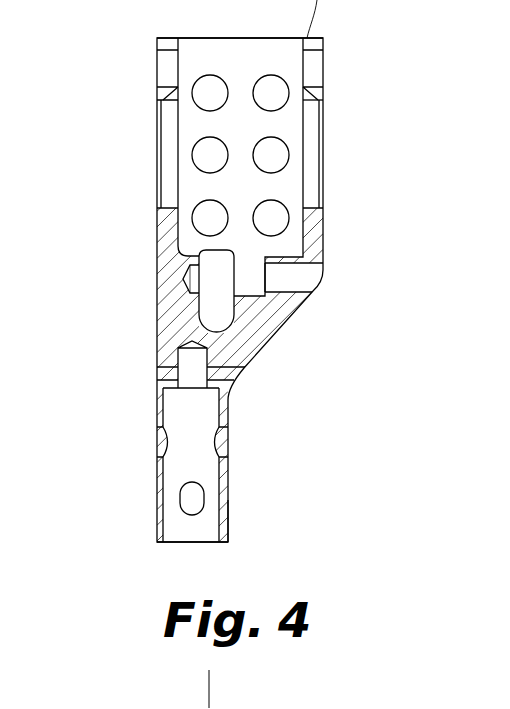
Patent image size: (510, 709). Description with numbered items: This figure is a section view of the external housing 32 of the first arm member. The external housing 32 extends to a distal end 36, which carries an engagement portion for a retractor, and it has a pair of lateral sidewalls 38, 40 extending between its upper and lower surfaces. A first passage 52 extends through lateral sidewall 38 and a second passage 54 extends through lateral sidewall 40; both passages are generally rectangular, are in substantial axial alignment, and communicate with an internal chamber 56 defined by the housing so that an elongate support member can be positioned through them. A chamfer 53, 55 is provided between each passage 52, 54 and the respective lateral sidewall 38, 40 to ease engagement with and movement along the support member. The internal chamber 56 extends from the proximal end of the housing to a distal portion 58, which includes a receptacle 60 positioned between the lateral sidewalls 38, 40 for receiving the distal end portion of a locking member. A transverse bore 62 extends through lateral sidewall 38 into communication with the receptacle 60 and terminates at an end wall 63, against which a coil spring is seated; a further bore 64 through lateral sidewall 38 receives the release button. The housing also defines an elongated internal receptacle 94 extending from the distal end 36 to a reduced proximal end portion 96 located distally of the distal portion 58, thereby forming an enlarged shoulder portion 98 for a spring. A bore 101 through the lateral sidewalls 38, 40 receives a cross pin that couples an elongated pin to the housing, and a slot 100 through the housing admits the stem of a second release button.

The external housing 32 is at (145, 26).
The distal end 36 is at (226, 542).
The lateral sidewall 38 is at (325, 218).
The lateral sidewall 40 is at (157, 250).
The first passage 52 is at (323, 118).
The chamfer 53 is at (323, 160).
The second passage 54 is at (156, 118).
The chamfer 55 is at (157, 155).
The internal chamber 56 is at (232, 197).
The distal portion 58 is at (322, 247).
The receptacle 60 is at (205, 303).
The transverse bore 62 is at (312, 280).
The end wall 63 is at (183, 266).
The bore 64 is at (330, 63).
The internal receptacle 94 is at (178, 470).
The proximal end portion 96 is at (224, 333).
The shoulder portion 98 is at (214, 394).
The slot 100 is at (196, 497).
The bore 101 is at (170, 379).